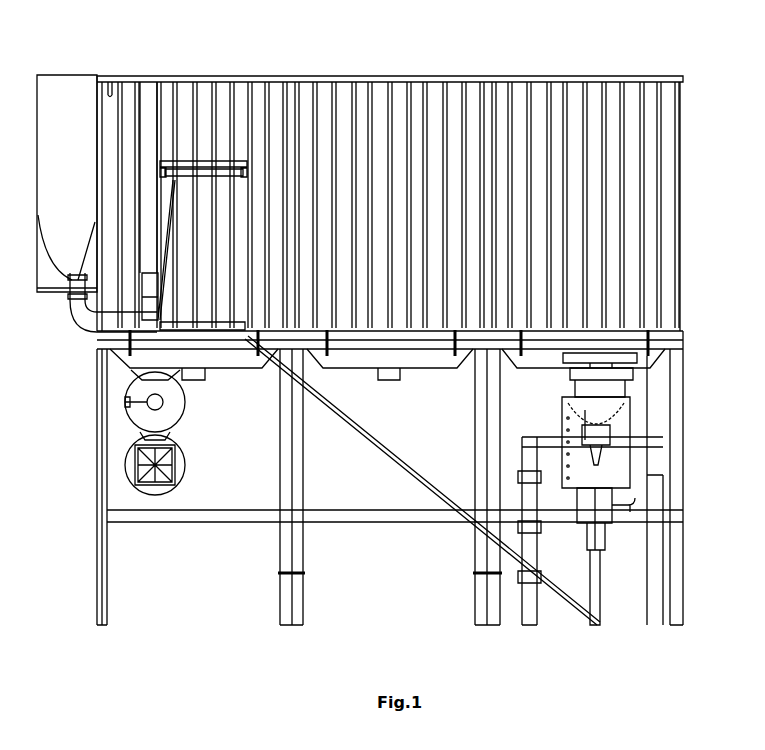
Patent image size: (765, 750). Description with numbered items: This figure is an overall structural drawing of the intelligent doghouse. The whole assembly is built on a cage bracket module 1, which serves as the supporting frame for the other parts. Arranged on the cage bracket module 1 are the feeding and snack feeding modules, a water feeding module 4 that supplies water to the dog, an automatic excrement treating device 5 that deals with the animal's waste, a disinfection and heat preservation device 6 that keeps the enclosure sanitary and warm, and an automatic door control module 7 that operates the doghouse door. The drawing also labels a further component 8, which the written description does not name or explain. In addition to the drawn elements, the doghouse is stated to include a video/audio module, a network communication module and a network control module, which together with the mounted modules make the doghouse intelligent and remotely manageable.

The cage bracket module 1 is at (392, 100).
The water feeding module 4 is at (50, 272).
The automatic excrement treating device 5 is at (613, 408).
The disinfection and heat preservation device 6 is at (133, 483).
The automatic door control module 7 is at (233, 157).
The chute 8 is at (118, 192).